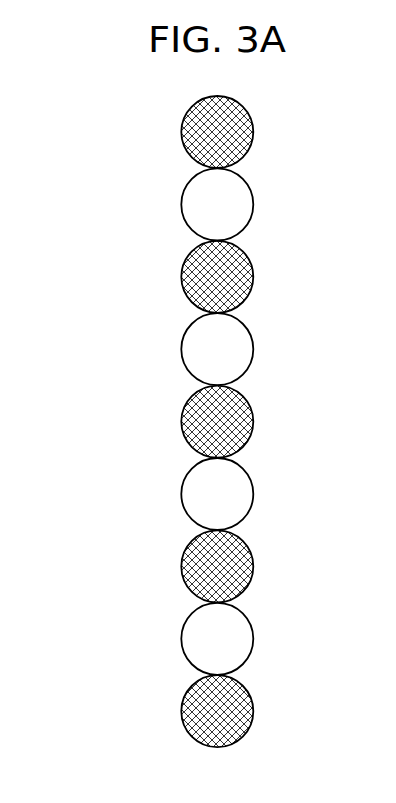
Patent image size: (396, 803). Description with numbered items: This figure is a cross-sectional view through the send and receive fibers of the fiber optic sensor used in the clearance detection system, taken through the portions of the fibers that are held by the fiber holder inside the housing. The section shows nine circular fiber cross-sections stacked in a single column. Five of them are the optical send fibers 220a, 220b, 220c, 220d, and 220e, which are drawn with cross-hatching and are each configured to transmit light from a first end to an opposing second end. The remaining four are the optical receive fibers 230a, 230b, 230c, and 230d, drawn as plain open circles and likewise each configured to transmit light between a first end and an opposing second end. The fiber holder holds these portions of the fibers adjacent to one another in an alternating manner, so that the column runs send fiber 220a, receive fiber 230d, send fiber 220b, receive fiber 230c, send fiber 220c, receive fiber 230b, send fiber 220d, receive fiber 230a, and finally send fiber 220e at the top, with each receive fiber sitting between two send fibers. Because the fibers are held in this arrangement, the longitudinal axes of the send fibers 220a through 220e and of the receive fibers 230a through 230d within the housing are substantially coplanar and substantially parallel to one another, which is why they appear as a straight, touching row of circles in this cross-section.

The optical send fiber 220a is at (181, 711).
The optical send fiber 220b is at (181, 567).
The optical send fiber 220c is at (181, 422).
The optical send fiber 220d is at (181, 277).
The optical send fiber 220e is at (181, 132).
The optical receive fiber 230a is at (253, 204).
The optical receive fiber 230b is at (253, 349).
The optical receive fiber 230c is at (253, 494).
The optical receive fiber 230d is at (253, 639).